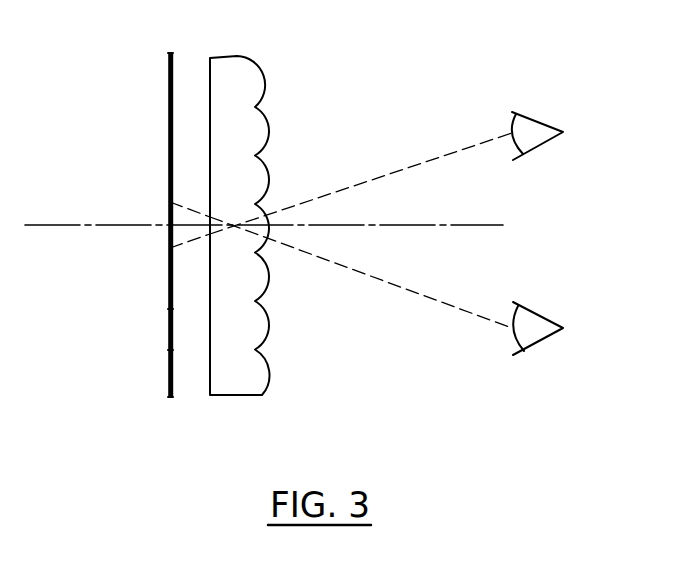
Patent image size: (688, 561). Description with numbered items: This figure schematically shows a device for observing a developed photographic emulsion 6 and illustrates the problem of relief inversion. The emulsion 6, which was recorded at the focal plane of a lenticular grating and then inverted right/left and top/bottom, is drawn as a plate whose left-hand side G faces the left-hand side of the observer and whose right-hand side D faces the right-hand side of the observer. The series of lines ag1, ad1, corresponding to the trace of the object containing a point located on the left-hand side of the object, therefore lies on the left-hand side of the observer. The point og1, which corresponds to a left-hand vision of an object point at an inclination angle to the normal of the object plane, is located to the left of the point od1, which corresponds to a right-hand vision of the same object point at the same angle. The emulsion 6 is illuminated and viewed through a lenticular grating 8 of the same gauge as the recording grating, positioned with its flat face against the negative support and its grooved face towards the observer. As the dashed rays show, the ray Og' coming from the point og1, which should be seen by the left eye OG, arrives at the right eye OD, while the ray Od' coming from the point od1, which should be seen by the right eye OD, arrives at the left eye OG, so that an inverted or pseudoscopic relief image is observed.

The photographic emulsion 6 is at (168, 389).
The lenticular grating 8 is at (238, 380).
The right-hand side of the image D is at (139, 41).
The left-hand side of the image G is at (139, 410).
The point od1 is at (170, 202).
The point og1 is at (170, 248).
The line ad1 is at (170, 309).
The line ag1 is at (170, 350).
The ray Od' is at (361, 285).
The ray Og' is at (361, 169).
The right eye OD is at (559, 136).
The left eye OG is at (560, 328).